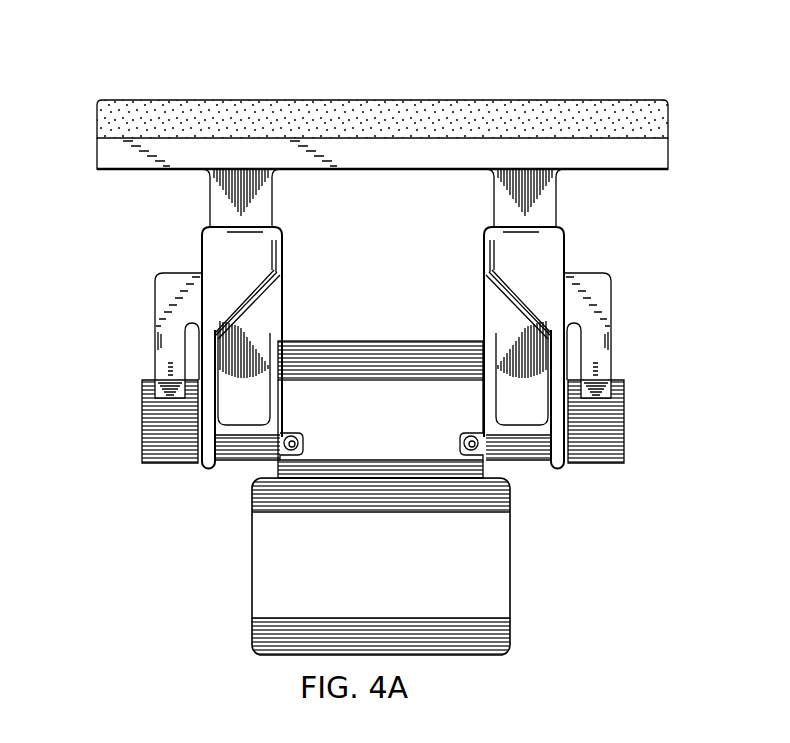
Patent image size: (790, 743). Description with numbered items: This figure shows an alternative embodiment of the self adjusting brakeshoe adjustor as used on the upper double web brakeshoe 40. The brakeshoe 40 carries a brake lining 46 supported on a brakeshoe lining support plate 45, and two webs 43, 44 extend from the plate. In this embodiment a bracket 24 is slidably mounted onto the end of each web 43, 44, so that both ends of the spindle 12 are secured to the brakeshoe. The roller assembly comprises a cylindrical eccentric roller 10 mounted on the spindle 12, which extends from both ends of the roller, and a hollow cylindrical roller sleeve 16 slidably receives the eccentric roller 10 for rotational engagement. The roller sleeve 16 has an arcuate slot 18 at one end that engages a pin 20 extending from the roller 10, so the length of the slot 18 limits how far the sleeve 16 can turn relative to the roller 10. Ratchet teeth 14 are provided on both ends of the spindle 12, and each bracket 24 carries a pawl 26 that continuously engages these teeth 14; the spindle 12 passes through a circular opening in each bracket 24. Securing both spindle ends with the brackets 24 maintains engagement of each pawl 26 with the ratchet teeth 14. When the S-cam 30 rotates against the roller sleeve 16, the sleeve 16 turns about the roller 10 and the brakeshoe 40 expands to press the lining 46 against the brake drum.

The double web brakeshoe 40 is at (382, 121).
The brake lining 46 is at (290, 112).
The brakeshoe lining support plate 45 is at (343, 160).
The web end 43 is at (218, 209).
The web 44 is at (550, 213).
The bracket 24 is at (213, 250).
The pawl 26 is at (167, 340).
The ratchet teeth 14 is at (150, 415).
The spindle 12 is at (238, 455).
The roller sleeve 16 is at (305, 345).
The eccentric roller 10 is at (280, 436).
The pin 20 is at (293, 440).
The slot 18 is at (465, 452).
The S-cam 30 is at (258, 540).